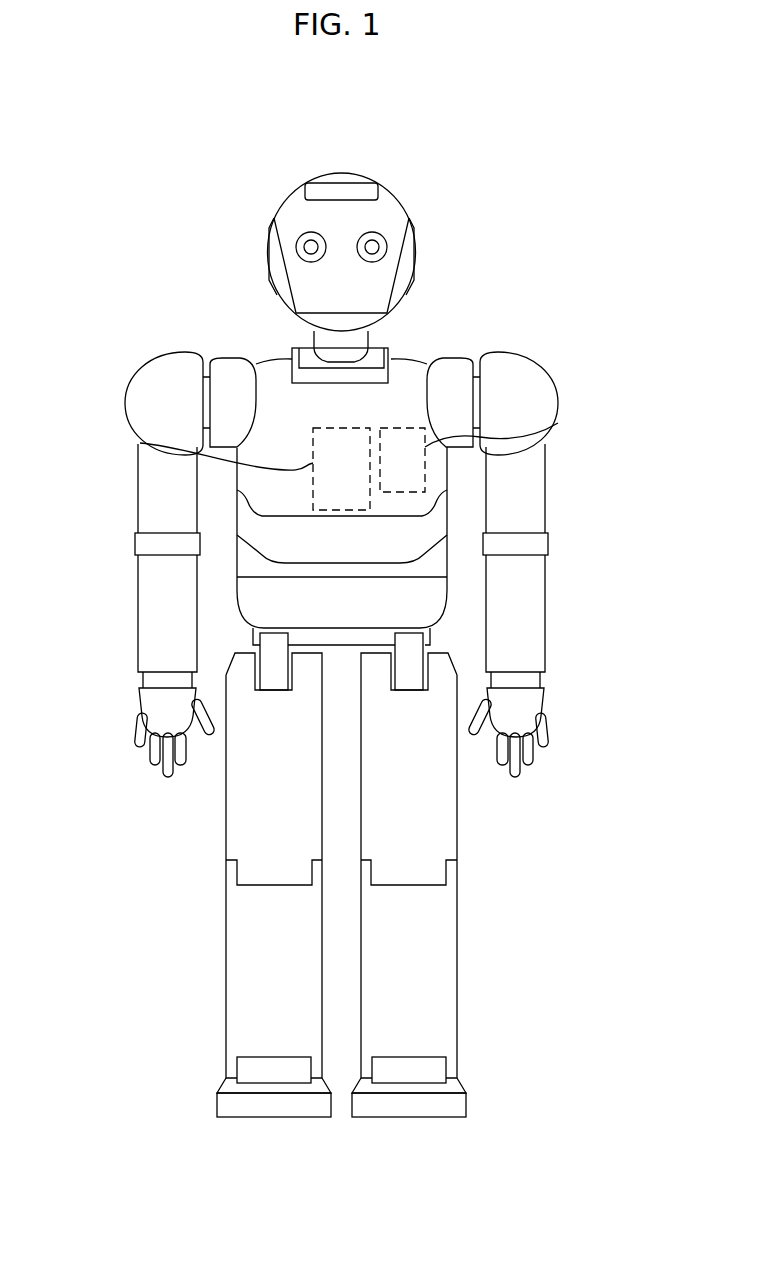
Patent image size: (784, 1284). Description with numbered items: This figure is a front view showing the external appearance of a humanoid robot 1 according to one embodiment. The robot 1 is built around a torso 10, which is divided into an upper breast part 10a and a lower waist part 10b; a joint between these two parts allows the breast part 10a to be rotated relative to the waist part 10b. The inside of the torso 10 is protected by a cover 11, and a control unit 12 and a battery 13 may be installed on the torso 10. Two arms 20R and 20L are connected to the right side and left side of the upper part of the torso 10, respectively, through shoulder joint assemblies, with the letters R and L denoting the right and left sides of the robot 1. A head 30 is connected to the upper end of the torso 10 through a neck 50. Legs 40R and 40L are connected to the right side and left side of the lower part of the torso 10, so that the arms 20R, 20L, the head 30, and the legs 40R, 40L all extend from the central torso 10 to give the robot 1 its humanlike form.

The humanoid robot 1 is at (536, 191).
The torso 10 is at (449, 488).
The breast part 10a is at (454, 515).
The waist part 10b is at (454, 590).
The cover 11 is at (447, 468).
The control unit 12 is at (137, 443).
The battery 13 is at (558, 423).
The right arm 20R is at (115, 535).
The left arm 20L is at (570, 615).
The head 30 is at (393, 184).
The right leg 40R is at (176, 848).
The left leg 40L is at (507, 848).
The neck 50 is at (382, 331).